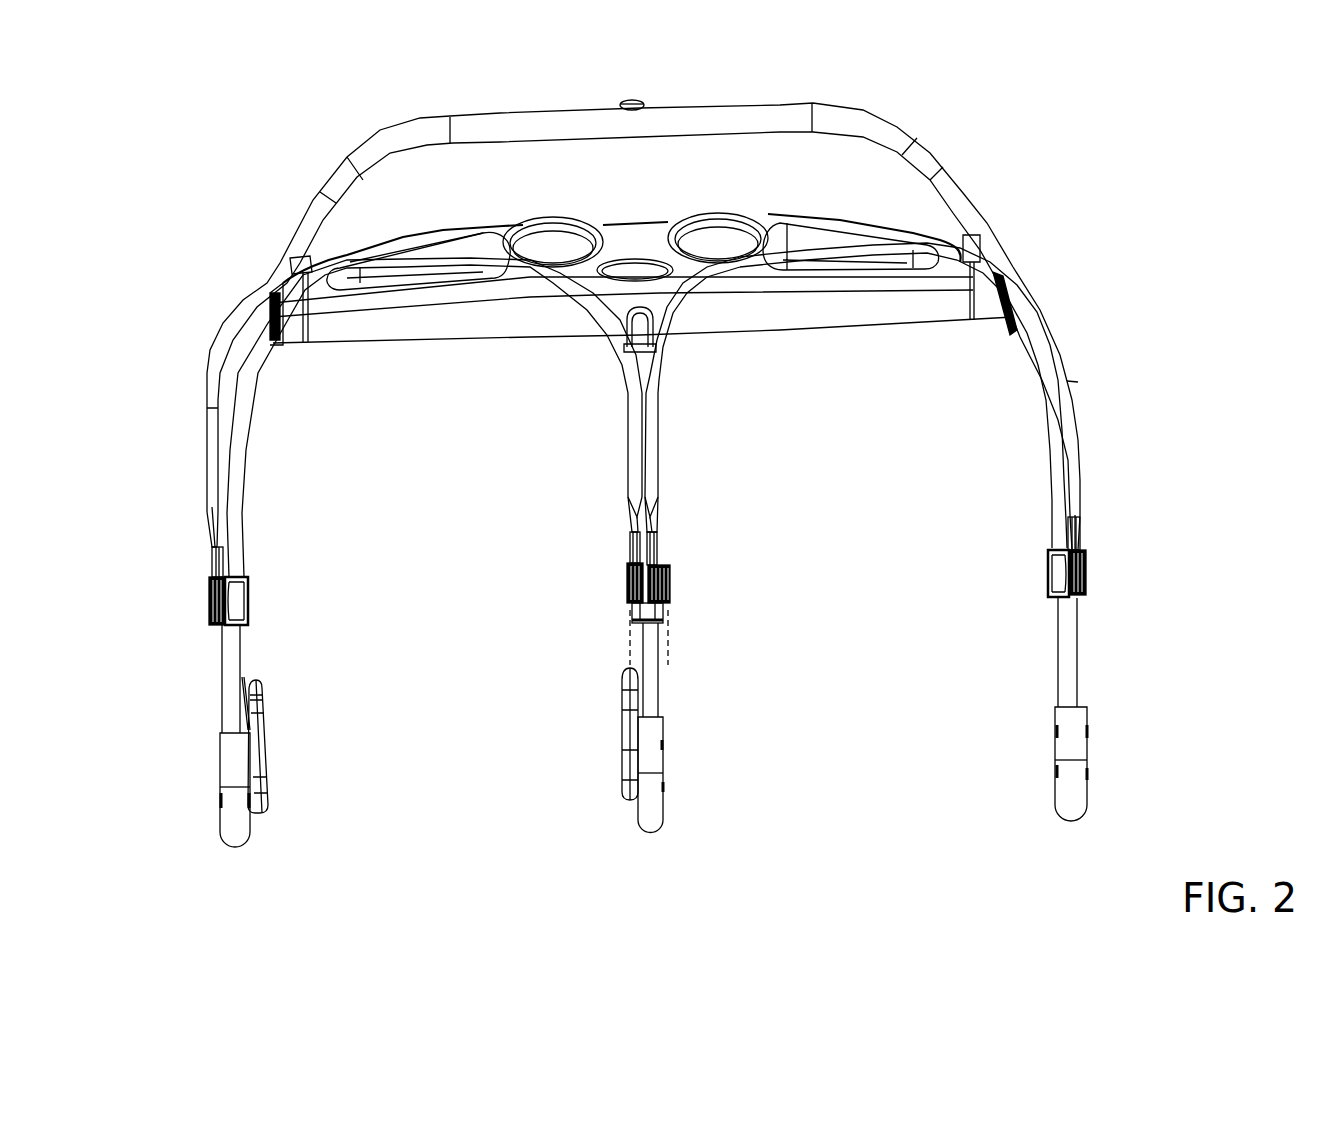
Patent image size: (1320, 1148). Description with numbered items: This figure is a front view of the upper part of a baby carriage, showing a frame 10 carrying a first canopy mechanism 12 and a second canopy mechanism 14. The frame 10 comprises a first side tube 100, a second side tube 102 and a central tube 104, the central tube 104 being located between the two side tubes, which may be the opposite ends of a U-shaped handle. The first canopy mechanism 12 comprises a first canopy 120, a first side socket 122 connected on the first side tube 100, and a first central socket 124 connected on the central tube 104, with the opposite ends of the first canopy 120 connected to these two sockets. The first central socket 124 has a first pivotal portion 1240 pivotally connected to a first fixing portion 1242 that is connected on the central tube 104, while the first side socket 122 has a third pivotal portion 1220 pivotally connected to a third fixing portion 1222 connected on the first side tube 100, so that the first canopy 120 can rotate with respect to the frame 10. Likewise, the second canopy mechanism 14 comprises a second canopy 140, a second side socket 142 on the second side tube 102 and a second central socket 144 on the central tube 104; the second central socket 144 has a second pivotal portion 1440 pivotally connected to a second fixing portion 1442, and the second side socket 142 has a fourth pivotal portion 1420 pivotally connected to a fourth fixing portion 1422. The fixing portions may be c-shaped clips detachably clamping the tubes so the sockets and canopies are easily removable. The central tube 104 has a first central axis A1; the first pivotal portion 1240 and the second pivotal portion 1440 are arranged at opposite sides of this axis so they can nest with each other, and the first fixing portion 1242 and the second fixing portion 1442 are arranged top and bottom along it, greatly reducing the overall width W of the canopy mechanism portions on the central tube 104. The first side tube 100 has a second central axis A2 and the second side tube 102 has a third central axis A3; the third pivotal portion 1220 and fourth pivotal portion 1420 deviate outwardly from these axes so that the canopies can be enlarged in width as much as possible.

The frame 10 is at (1100, 187).
The first canopy mechanism 12 is at (907, 471).
The second canopy mechanism 14 is at (437, 478).
The first side tube 100 is at (1080, 690).
The second side tube 102 is at (223, 708).
The central tube 104 is at (660, 717).
The first canopy 120 is at (857, 253).
The first side socket 122 is at (1041, 576).
The first central socket 124 is at (728, 544).
The second canopy 140 is at (414, 263).
The second side socket 142 is at (240, 575).
The second central socket 144 is at (639, 593).
The third pivotal portion 1220 is at (1120, 555).
The third fixing portion 1222 is at (1050, 563).
The first pivotal portion 1240 is at (663, 548).
The first fixing portion 1242 is at (643, 530).
The fourth pivotal portion 1420 is at (208, 577).
The fourth fixing portion 1422 is at (266, 598).
The second pivotal portion 1440 is at (627, 547).
The second fixing portion 1442 is at (667, 612).
The first central axis A1 is at (658, 903).
The second central axis A2 is at (1077, 917).
The third central axis A3 is at (239, 883).
The overall width W is at (668, 658).